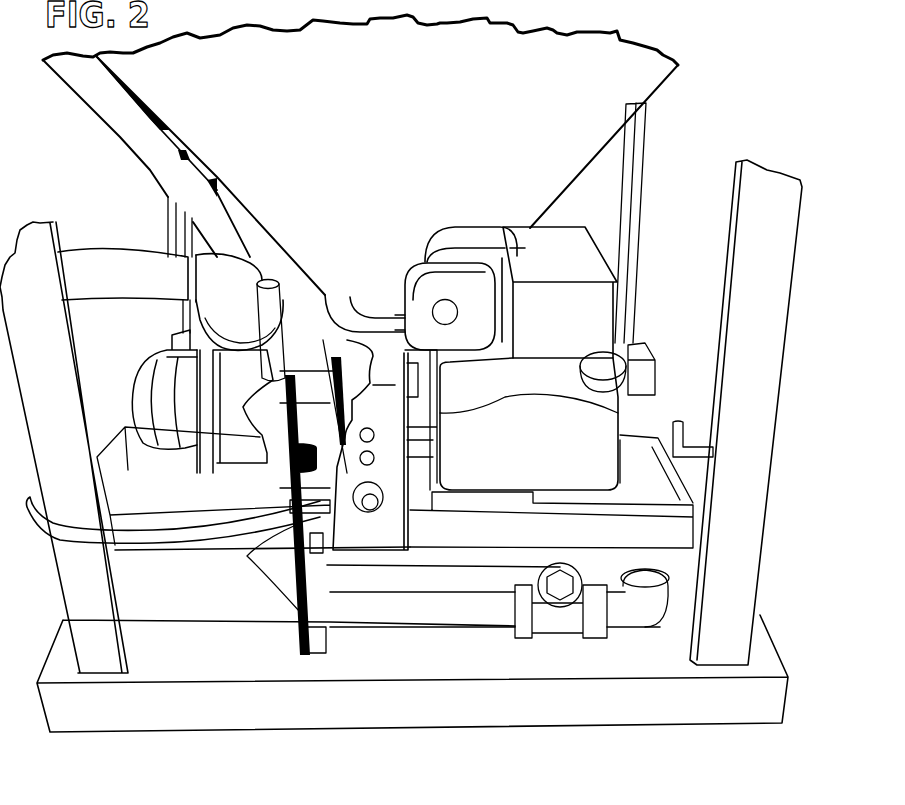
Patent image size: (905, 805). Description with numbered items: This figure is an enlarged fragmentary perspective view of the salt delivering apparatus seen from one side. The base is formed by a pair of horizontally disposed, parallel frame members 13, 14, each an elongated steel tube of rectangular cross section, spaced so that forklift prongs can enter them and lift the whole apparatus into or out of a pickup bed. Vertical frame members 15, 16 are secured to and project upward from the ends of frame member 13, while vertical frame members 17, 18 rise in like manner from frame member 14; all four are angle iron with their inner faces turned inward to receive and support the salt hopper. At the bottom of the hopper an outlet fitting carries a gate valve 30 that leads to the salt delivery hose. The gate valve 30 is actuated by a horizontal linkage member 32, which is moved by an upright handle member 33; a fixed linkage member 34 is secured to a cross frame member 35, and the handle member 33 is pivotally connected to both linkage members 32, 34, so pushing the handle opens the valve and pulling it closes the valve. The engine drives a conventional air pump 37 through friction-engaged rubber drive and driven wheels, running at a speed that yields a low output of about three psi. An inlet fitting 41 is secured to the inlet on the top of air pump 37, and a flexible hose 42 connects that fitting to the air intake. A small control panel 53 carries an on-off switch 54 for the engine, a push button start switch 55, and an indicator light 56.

The frame member 13 is at (743, 713).
The frame member 14 is at (650, 343).
The vertical frame member 15 is at (52, 397).
The vertical frame member 16 is at (734, 378).
The vertical frame member 17 is at (167, 212).
The vertical frame member 18 is at (647, 162).
The gate valve 30 is at (313, 357).
The horizontal linkage member 32 is at (330, 628).
The upright handle member 33 is at (263, 547).
The fixed linkage member 34 is at (325, 580).
The cross frame member 35 is at (183, 540).
The air pump 37 is at (200, 390).
The inlet fitting 41 is at (240, 285).
The flexible hose 42 is at (85, 248).
The control panel 53 is at (370, 537).
The on-off switch 54 is at (377, 505).
The push button start switch 55 is at (375, 457).
The indicator light 56 is at (375, 432).